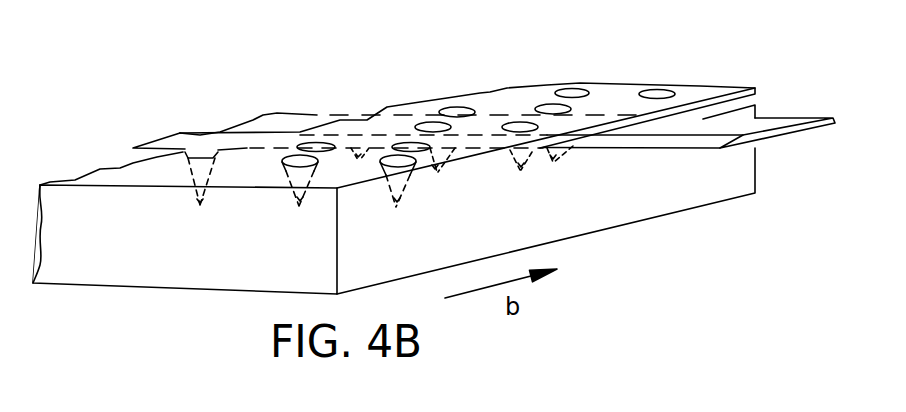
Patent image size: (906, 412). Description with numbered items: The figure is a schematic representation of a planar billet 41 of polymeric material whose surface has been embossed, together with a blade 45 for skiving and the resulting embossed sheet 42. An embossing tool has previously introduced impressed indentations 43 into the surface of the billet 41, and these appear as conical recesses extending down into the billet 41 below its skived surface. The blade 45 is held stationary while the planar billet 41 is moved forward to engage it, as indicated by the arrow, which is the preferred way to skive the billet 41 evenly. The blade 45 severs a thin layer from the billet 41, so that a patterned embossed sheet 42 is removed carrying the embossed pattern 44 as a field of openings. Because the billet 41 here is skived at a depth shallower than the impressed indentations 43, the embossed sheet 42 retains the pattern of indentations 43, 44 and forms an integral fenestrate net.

The billet 41 is at (82, 178).
The embossed sheet 42 is at (707, 92).
The impressed indentations 43 is at (407, 148).
The embossed pattern 44 is at (570, 93).
The blade 45 is at (200, 133).